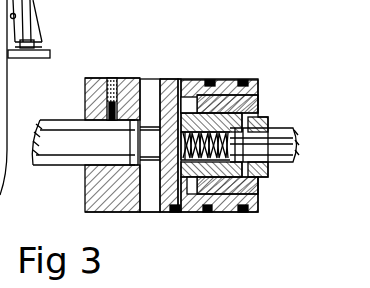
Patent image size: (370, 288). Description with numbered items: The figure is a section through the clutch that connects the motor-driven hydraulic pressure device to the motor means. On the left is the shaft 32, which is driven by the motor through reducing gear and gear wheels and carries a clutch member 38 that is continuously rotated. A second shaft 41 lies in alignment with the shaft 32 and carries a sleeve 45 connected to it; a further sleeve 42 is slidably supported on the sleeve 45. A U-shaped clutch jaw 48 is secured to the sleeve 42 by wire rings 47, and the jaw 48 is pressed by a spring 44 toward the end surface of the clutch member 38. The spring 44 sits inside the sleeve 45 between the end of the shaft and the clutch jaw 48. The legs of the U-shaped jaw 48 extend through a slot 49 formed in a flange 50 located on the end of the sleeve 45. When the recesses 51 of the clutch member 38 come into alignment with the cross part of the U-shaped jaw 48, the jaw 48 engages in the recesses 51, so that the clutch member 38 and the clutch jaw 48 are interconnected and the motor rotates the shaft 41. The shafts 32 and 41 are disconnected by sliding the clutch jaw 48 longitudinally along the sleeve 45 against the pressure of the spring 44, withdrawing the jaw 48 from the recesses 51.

The shaft 32 is at (60, 158).
The clutch member 38 is at (95, 92).
The second shaft 41 is at (280, 128).
The sleeve 42 is at (217, 100).
The spring 44 is at (204, 212).
The sleeve 45 is at (262, 116).
The wire rings 47 is at (207, 80).
The U-shaped clutch jaw 48 is at (172, 88).
The slot 49 is at (173, 212).
The flange 50 is at (184, 213).
The recesses 51 is at (149, 97).